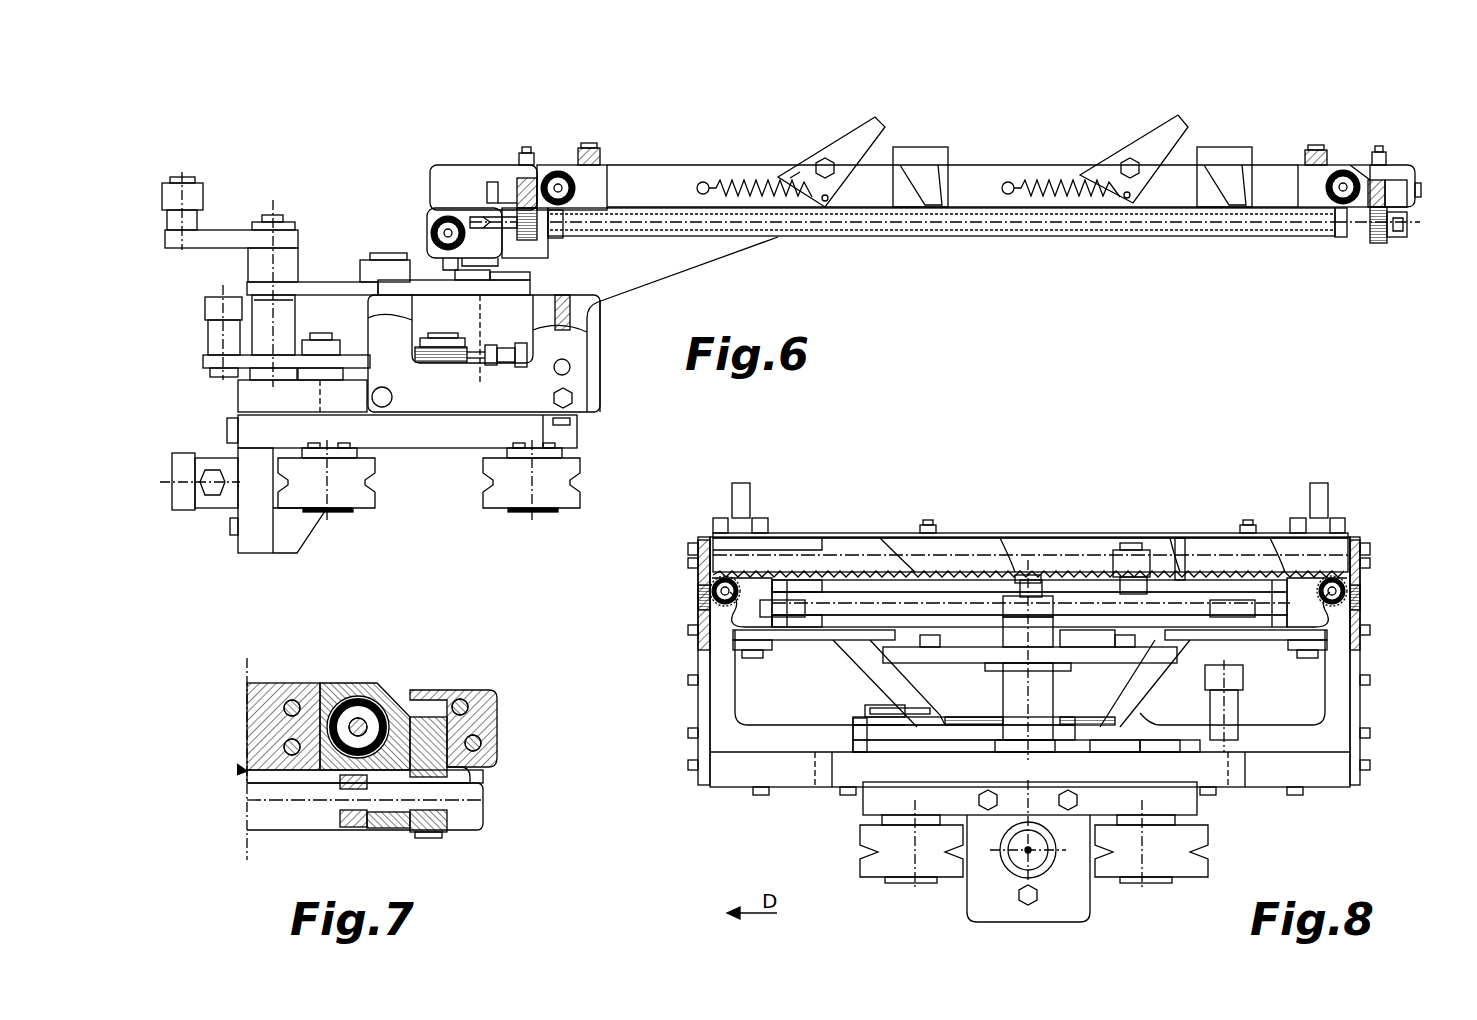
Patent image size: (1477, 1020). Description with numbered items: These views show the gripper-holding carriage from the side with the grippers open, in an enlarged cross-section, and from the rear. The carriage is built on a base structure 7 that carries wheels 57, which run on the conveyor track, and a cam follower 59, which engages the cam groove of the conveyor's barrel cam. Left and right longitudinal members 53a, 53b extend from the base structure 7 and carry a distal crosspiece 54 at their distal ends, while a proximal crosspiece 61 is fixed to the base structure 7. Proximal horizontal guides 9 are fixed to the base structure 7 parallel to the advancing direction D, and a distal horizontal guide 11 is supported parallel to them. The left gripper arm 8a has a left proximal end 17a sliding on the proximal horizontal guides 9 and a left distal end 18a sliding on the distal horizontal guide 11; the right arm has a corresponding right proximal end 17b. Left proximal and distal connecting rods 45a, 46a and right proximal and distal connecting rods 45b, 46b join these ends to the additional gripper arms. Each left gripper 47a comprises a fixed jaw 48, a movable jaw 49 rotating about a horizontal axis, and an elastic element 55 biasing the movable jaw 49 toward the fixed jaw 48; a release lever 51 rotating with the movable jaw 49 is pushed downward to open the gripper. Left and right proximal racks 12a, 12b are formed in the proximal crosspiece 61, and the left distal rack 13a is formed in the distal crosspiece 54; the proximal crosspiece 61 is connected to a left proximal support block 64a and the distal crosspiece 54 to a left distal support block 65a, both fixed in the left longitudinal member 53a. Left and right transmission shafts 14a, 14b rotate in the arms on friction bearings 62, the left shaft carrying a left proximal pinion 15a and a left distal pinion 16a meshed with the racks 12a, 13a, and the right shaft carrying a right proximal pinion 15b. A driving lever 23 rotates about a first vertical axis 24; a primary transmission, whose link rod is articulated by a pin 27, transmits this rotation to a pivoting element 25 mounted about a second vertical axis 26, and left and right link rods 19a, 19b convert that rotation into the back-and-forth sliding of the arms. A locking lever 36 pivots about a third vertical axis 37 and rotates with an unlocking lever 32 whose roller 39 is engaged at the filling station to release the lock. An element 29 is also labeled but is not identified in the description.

In FIG. 6, the base structure 7 is at (410, 438).
In FIG. 8, the base structure 7 is at (787, 790).
In FIG. 6, the left gripper arm 8a is at (990, 172).
In FIG. 7, the left gripper arm 8a is at (278, 683).
In FIG. 6, the proximal horizontal guides 9 is at (432, 222).
In FIG. 8, the proximal horizontal guides 9 is at (860, 612).
In FIG. 6, the distal horizontal guide 11 is at (1345, 168).
In FIG. 7, the distal horizontal guide 11 is at (378, 685).
In FIG. 6, the left proximal rack 12a is at (487, 200).
In FIG. 8, the left proximal rack 12a is at (775, 575).
In FIG. 8, the right proximal rack 12b is at (1295, 575).
In FIG. 6, the left distal rack 13a is at (1345, 238).
In FIG. 7, the left distal rack 13a is at (470, 775).
In FIG. 6, the left transmission shaft 14a is at (913, 238).
In FIG. 7, the left transmission shaft 14a is at (290, 815).
In FIG. 8, the left transmission shaft 14a is at (705, 592).
In FIG. 8, the right transmission shaft 14b is at (1350, 592).
In FIG. 6, the left proximal pinion 15a is at (530, 243).
In FIG. 8, the left proximal pinion 15a is at (698, 605).
In FIG. 8, the right proximal pinion 15b is at (1360, 605).
In FIG. 6, the left distal pinion 16a is at (1382, 245).
In FIG. 7, the left distal pinion 16a is at (433, 838).
In FIG. 6, the left proximal end 17a is at (600, 178).
In FIG. 8, the left proximal end 17a is at (740, 640).
In FIG. 8, the right proximal end 17b is at (1320, 640).
In FIG. 6, the left distal end 18a is at (1305, 200).
In FIG. 7, the left distal end 18a is at (338, 683).
In FIG. 8, the left link rod 19a is at (790, 642).
In FIG. 8, the right link rod 19b is at (1262, 642).
In FIG. 6, the driving lever 23 is at (230, 232).
In FIG. 8, the driving lever 23 is at (1063, 580).
In FIG. 6, the first vertical axis 24 is at (272, 266).
In FIG. 8, the pivoting element 25 is at (950, 655).
In FIG. 6, the second vertical axis 26 is at (520, 330).
In FIG. 8, the pin 27 is at (1085, 652).
In FIG. 6, the bolt 29 is at (165, 197).
In FIG. 8, the bolt 29 is at (1115, 540).
In FIG. 6, the unlocking lever 32 is at (205, 360).
In FIG. 8, the unlocking lever 32 is at (1182, 742).
In FIG. 8, the locking lever 36 is at (930, 790).
In FIG. 6, the third vertical axis 37 is at (310, 387).
In FIG. 6, the roller 39 is at (205, 308).
In FIG. 8, the roller 39 is at (1237, 680).
In FIG. 6, the left proximal connecting rod 45a is at (592, 142).
In FIG. 8, the left proximal connecting rod 45a is at (930, 585).
In FIG. 8, the right proximal connecting rod 45b is at (1160, 525).
In FIG. 6, the left distal connecting rod 46a is at (1313, 142).
In FIG. 8, the left distal connecting rod 46a is at (918, 525).
In FIG. 8, the right distal connecting rod 46b is at (1178, 582).
In FIG. 6, the left gripper 47a is at (900, 125).
In FIG. 6, the fixed jaw 48 is at (920, 160).
In FIG. 6, the movable jaw 49 is at (860, 130).
In FIG. 8, the movable jaw 49 is at (735, 500).
In FIG. 6, the release lever 51 is at (795, 175).
In FIG. 6, the left longitudinal member 53a is at (690, 255).
In FIG. 7, the left longitudinal member 53a is at (250, 778).
In FIG. 8, the left longitudinal member 53a is at (698, 705).
In FIG. 8, the right longitudinal member 53b is at (1362, 705).
In FIG. 6, the distal crosspiece 54 is at (1422, 188).
In FIG. 7, the distal crosspiece 54 is at (432, 722).
In FIG. 6, the elastic element 55 is at (760, 212).
In FIG. 6, the wheels 57 is at (352, 508).
In FIG. 8, the wheels 57 is at (905, 870).
In FIG. 6, the cam follower 59 is at (178, 492).
In FIG. 8, the cam follower 59 is at (1010, 865).
In FIG. 6, the proximal crosspiece 61 is at (490, 185).
In FIG. 8, the proximal crosspiece 61 is at (830, 560).
In FIG. 7, the friction bearings 62 is at (372, 828).
In FIG. 6, the left proximal support block 64a is at (523, 180).
In FIG. 6, the left distal support block 65a is at (1393, 172).
In FIG. 7, the left distal support block 65a is at (490, 718).